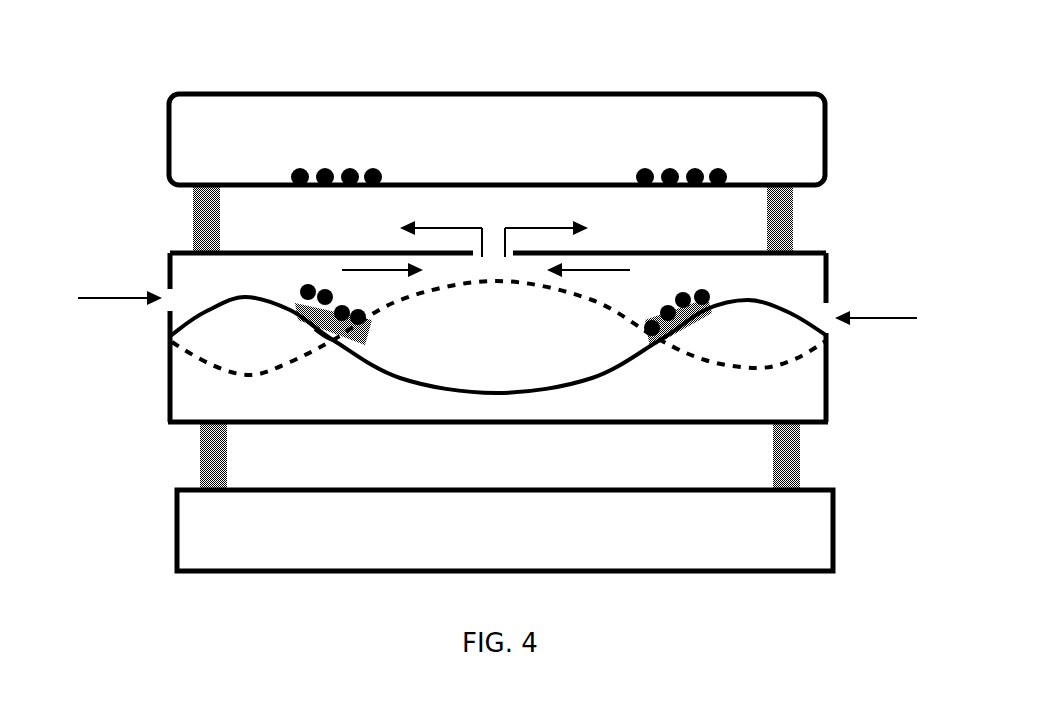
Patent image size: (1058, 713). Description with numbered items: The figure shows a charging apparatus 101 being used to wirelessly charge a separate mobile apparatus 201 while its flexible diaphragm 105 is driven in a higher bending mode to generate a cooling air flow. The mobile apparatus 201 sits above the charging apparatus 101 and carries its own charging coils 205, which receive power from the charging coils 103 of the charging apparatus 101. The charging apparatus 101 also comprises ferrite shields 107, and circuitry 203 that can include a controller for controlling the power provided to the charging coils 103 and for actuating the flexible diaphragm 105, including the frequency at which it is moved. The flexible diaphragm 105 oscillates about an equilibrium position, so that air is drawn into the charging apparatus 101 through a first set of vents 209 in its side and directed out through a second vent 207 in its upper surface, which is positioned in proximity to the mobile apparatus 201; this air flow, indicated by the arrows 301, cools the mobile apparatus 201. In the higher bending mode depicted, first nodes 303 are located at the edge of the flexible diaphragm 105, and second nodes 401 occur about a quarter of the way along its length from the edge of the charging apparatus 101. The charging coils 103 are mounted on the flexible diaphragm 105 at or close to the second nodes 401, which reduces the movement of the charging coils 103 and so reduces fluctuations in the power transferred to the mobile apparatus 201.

The charging apparatus 101 is at (828, 425).
The charging coils 103 is at (713, 292).
The flexible diaphragm 105 is at (757, 303).
The ferrite shields 107 is at (310, 320).
The mobile apparatus 201 is at (545, 100).
The circuitry 203 is at (257, 575).
The charging coils 205 is at (312, 168).
The second vent 207 is at (488, 253).
The first set of vents 209 is at (168, 303).
The arrows 301 is at (377, 267).
The first nodes 303 is at (827, 333).
The second nodes 401 is at (333, 340).